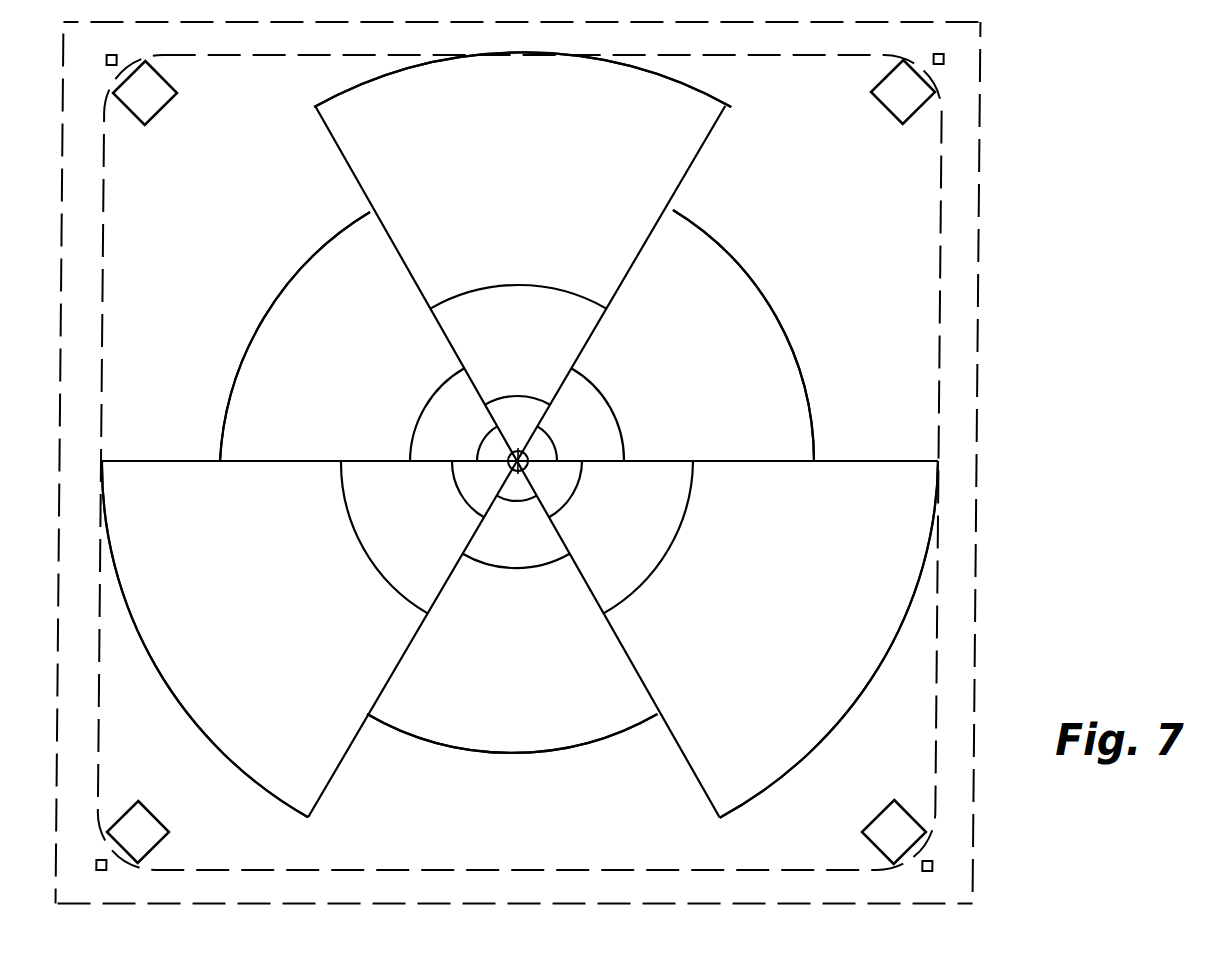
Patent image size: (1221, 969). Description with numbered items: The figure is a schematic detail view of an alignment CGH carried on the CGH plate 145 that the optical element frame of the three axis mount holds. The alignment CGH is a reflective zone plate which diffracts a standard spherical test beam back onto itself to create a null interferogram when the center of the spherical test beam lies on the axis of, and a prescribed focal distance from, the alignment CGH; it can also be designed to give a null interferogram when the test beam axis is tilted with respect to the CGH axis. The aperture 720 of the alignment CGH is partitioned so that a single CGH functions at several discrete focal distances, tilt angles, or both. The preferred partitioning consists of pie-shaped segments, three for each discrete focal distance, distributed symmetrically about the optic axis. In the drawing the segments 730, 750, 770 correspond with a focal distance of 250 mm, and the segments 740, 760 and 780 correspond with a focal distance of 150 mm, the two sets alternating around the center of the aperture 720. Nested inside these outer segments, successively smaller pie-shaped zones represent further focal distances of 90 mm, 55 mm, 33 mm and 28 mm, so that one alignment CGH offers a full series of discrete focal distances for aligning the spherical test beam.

The CGH plate 145 is at (984, 279).
The aperture of the alignment CGH 720 is at (1005, 418).
The segment 730 is at (838, 725).
The segment 740 is at (503, 755).
The segment 750 is at (202, 733).
The segment 760 is at (270, 303).
The segment 770 is at (689, 83).
The segment 780 is at (750, 276).
The 250 unit radius zone 250 is at (520, 434).
The 150 unit radius zone 150 is at (516, 481).
The 90 unit radius zone 90 is at (517, 449).
The 55 unit radius zone 55 is at (517, 468).
The 33 unit radius zone 33 is at (516, 456).
The 28 unit radius zone 28 is at (502, 485).